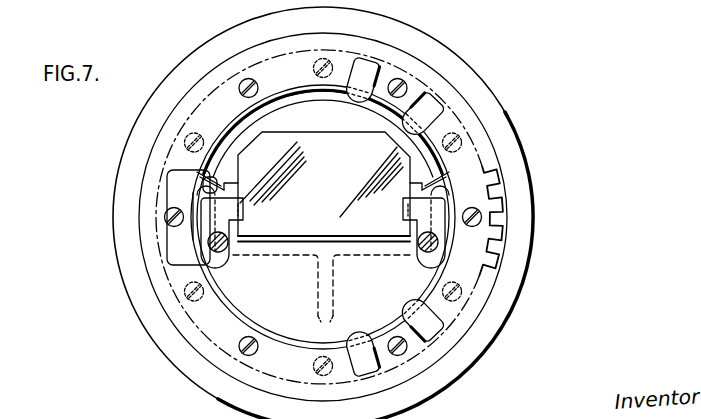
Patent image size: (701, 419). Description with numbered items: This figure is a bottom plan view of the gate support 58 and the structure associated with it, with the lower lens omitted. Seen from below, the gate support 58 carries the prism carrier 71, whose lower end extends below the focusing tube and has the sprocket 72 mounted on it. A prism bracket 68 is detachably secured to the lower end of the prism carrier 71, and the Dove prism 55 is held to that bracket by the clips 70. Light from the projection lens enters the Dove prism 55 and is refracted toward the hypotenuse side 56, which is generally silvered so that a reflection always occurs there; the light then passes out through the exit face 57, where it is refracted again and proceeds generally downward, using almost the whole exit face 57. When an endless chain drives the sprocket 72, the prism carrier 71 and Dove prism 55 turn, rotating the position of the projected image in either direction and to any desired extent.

The Dove prism 55 is at (323, 172).
The hypotenuse side 56 is at (300, 246).
The exit face 57 is at (298, 144).
The gate support 58 is at (518, 216).
The prism bracket 68 is at (247, 137).
The clip 70 is at (245, 206).
The prism carrier 71 is at (285, 98).
The sprocket 72 is at (490, 163).